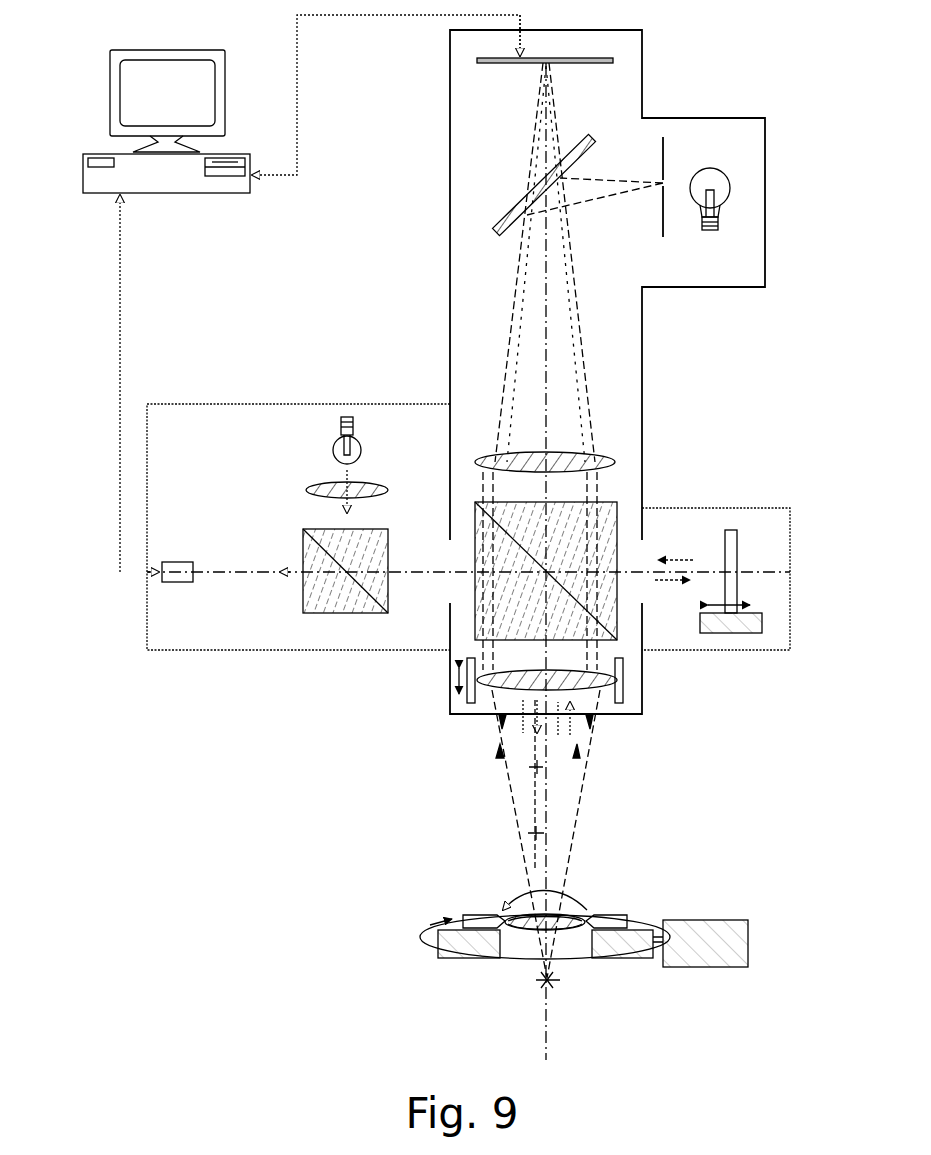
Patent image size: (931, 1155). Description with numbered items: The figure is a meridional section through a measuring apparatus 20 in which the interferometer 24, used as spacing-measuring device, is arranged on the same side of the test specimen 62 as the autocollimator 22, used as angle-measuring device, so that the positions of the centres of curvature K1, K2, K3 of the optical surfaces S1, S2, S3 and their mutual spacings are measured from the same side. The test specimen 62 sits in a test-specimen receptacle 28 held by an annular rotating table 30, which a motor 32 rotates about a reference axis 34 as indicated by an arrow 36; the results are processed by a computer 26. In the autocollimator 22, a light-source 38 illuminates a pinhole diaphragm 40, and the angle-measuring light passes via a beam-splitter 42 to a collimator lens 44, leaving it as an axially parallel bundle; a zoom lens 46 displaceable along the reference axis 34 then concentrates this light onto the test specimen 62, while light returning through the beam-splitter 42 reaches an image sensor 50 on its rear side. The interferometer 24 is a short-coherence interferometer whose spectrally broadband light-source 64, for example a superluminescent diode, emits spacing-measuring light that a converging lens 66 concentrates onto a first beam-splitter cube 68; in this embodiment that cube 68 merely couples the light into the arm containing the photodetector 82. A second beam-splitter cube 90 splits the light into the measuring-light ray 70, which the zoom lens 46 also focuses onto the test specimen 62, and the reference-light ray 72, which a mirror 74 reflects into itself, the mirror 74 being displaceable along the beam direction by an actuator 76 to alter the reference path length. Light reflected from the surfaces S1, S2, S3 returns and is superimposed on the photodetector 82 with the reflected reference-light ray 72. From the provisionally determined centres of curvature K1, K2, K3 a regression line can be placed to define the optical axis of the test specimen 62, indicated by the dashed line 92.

The measuring apparatus 20 is at (380, 337).
The autocollimator 22 is at (440, 162).
The interferometer 24 is at (267, 662).
The computer 26 is at (197, 190).
The test-specimen receptacle 28 is at (608, 914).
The rotating table 30 is at (635, 930).
The motor 32 is at (697, 920).
The reference axis 34 is at (545, 302).
The arrow 36 is at (435, 918).
The light-source 38 is at (737, 192).
The pinhole diaphragm 40 is at (668, 157).
The beam-splitter 42 is at (500, 228).
The collimator lens 44 is at (605, 460).
The zoom lens 46 is at (600, 690).
The image sensor 50 is at (494, 64).
The test specimen 62 is at (523, 930).
The light-source 64 is at (366, 432).
The converging lens 66 is at (370, 485).
The beam-splitter cube 68 is at (303, 548).
The measuring-light ray 70 is at (522, 718).
The reference-light ray 72 is at (666, 582).
The mirror 74 is at (725, 560).
The actuator 76 is at (732, 633).
The photodetector 82 is at (177, 562).
The second beam-splitter cube 90 is at (615, 512).
The provisional optical axis 92 is at (533, 800).
The centre of curvature K1 is at (552, 978).
The centre of curvature K2 is at (533, 833).
The centre of curvature K3 is at (533, 767).
The optical surface S1 is at (502, 907).
The optical surface S2 is at (522, 908).
The optical surface S3 is at (560, 927).